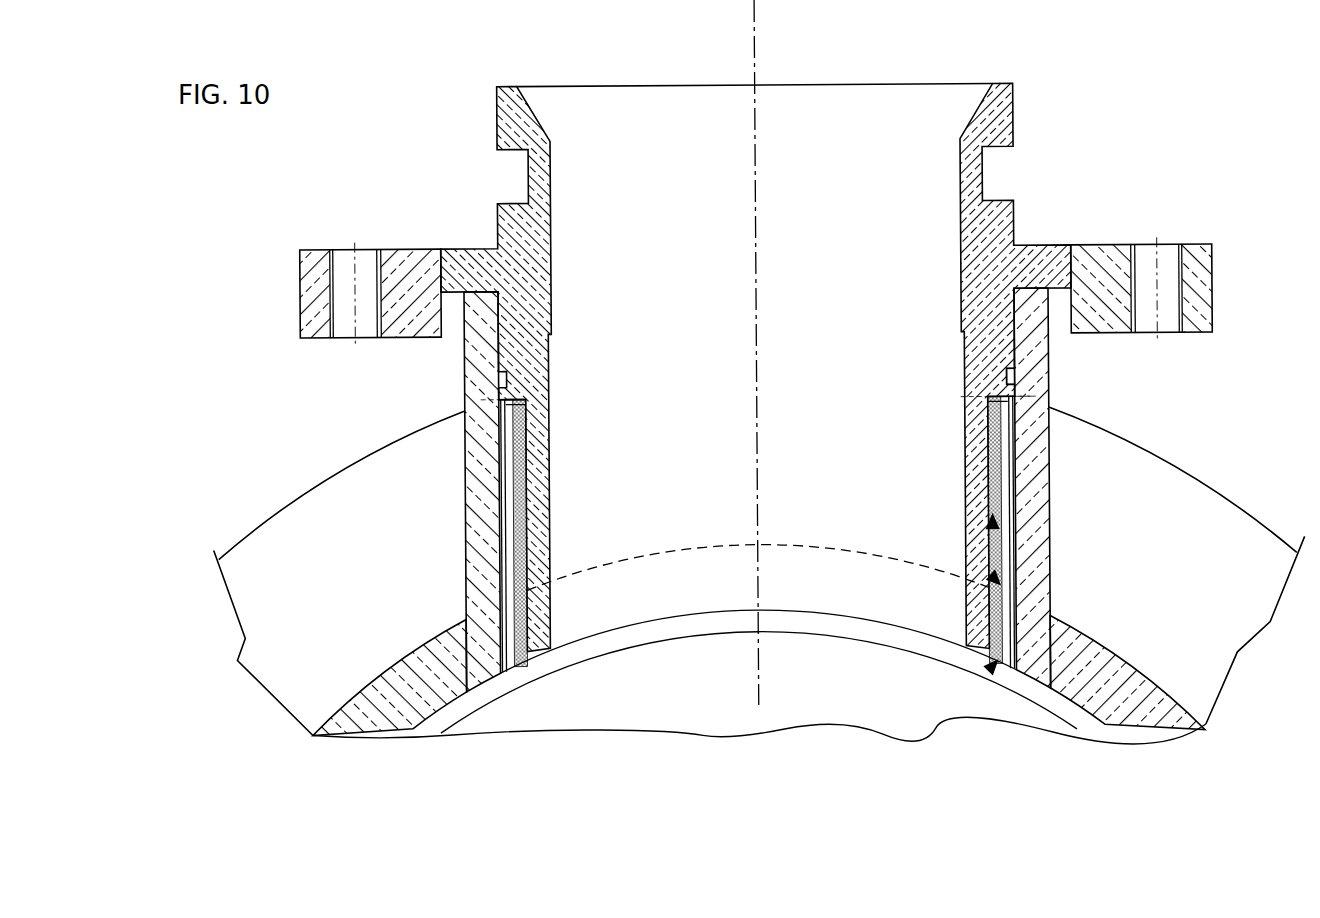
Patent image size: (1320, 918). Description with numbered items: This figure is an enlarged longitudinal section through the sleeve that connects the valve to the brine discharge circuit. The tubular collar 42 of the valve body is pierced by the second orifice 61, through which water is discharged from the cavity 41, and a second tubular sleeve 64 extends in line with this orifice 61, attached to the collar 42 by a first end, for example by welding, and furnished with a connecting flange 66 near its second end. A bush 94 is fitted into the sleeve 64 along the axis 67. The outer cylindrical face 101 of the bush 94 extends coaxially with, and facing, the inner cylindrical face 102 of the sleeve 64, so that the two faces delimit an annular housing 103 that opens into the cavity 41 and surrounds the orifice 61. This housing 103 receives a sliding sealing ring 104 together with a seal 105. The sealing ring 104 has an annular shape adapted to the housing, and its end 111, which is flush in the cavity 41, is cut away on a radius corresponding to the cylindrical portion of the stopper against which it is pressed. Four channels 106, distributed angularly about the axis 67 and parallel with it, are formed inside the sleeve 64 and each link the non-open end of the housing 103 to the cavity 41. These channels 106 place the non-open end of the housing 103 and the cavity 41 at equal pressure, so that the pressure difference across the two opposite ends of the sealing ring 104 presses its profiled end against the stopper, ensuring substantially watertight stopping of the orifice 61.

The cavity 41 is at (686, 696).
The tubular collar 42 is at (1127, 693).
The second orifice 61 is at (965, 646).
The second tubular sleeve 64 is at (1050, 513).
The connecting flange 66 is at (1212, 280).
The axis 67 is at (760, 147).
The bush 94 is at (964, 202).
The outer cylindrical face 101 is at (991, 522).
The inner cylindrical face 102 is at (994, 579).
The housing 103 is at (1005, 398).
The sliding sealing ring 104 is at (518, 525).
The seal 105 is at (525, 400).
The channels 106 is at (503, 490).
The end of sealing ring 111 is at (990, 670).